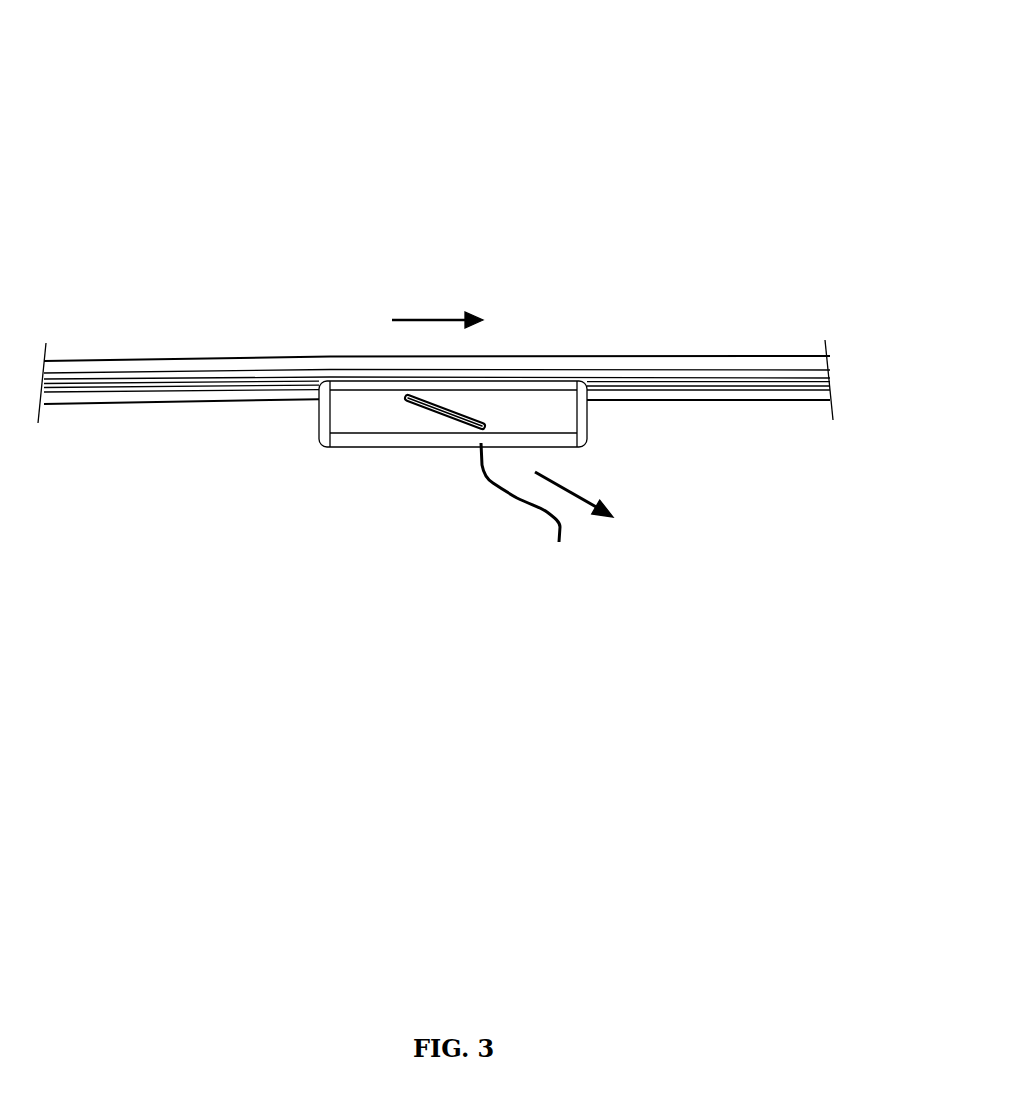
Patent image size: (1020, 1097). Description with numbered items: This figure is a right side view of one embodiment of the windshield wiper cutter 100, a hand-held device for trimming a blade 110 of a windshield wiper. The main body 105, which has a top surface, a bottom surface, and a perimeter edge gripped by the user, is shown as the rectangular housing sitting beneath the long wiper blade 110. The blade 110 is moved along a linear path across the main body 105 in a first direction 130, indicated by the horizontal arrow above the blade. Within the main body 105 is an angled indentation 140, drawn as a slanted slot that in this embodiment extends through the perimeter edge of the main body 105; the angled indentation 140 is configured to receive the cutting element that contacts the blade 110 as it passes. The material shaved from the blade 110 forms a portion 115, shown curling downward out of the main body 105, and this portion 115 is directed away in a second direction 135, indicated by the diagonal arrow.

The windshield wiper cutter 100 is at (582, 117).
The main body 105 is at (533, 371).
The blade 110 is at (435, 367).
The portion 115 is at (587, 526).
The first direction 130 is at (480, 299).
The second direction 135 is at (630, 486).
The angled indentation 140 is at (371, 446).